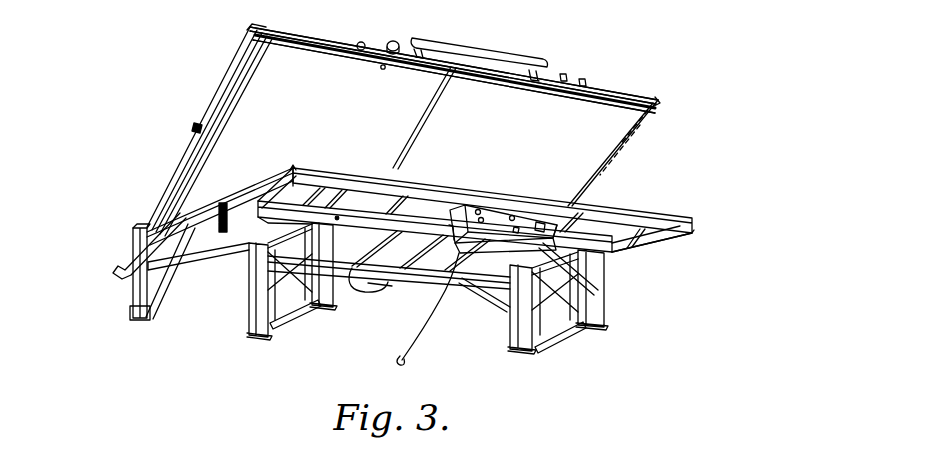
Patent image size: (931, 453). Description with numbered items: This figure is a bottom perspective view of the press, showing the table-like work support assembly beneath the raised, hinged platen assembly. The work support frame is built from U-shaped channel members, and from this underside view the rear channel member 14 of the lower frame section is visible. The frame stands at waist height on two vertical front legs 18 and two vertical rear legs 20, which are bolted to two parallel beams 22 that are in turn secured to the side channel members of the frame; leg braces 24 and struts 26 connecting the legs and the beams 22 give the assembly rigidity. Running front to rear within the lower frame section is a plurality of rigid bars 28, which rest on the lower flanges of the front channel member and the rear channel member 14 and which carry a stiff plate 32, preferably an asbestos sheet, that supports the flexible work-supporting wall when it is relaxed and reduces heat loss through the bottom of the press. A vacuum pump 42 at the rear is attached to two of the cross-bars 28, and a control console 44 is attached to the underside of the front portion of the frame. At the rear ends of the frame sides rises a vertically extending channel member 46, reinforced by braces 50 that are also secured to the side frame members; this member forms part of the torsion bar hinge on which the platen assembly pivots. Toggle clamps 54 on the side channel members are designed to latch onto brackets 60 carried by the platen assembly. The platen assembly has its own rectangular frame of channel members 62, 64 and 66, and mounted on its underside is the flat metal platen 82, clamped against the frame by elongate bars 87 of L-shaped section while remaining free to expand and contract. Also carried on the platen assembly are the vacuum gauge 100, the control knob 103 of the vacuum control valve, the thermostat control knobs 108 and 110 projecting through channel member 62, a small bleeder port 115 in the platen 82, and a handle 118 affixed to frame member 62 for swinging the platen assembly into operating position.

The rear channel member 14 is at (134, 231).
The front legs 18 is at (322, 313).
The rear legs 20 is at (253, 308).
The beams 22 is at (463, 286).
The leg braces 24 is at (297, 317).
The struts 26 is at (359, 283).
The rigid bars 28 is at (329, 197).
The plate 32 is at (291, 166).
The vacuum pump 42 is at (375, 288).
The control console 44 is at (500, 212).
The vertically extending channel member 46 is at (130, 297).
The braces 50 is at (152, 296).
The toggle clamps 54 is at (222, 205).
The brackets 60 is at (195, 127).
The channel member 62 is at (295, 35).
The channel member 64 is at (208, 268).
The channel member 66 is at (218, 90).
The platen 82 is at (183, 200).
The elongate bars 87 is at (325, 43).
The vacuum gauge 100 is at (394, 40).
The control knob 103 is at (360, 42).
The control knob 108 is at (563, 74).
The control knob 110 is at (582, 79).
The bleeder port 115 is at (382, 69).
The handle 118 is at (527, 63).